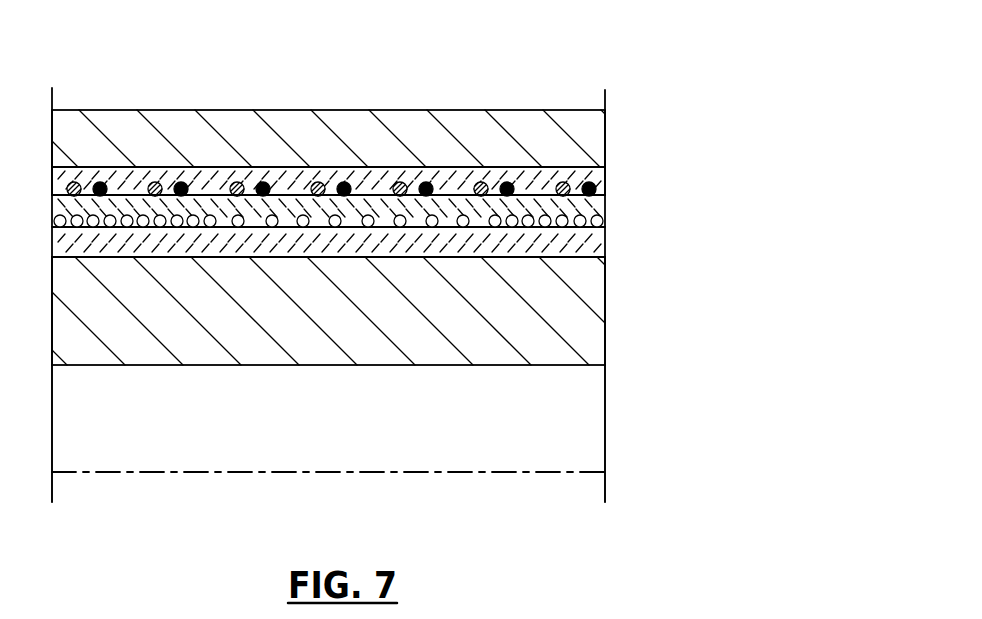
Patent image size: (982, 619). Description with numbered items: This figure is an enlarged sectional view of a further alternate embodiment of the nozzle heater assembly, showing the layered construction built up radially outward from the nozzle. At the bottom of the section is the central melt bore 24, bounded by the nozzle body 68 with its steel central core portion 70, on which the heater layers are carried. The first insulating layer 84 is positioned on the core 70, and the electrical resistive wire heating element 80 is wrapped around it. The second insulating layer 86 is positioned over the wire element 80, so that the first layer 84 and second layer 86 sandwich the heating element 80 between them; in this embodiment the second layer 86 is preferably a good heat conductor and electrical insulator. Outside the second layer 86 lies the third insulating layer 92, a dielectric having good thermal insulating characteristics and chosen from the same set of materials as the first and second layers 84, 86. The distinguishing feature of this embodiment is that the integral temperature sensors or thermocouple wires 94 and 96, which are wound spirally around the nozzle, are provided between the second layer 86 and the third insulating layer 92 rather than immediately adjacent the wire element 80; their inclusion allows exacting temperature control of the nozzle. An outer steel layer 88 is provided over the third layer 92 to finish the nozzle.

The outer steel layer 88 is at (573, 127).
The third insulating layer 92 is at (523, 177).
The thermocouple wire 96 is at (588, 189).
The thermocouple wire 94 is at (597, 193).
The second insulating layer 86 is at (597, 212).
The electrical resistive wire heating element 80 is at (593, 238).
The first insulating layer 84 is at (592, 248).
The body 68 is at (577, 315).
The steel central core portion 70 is at (328, 311).
The central melt bore 24 is at (582, 430).